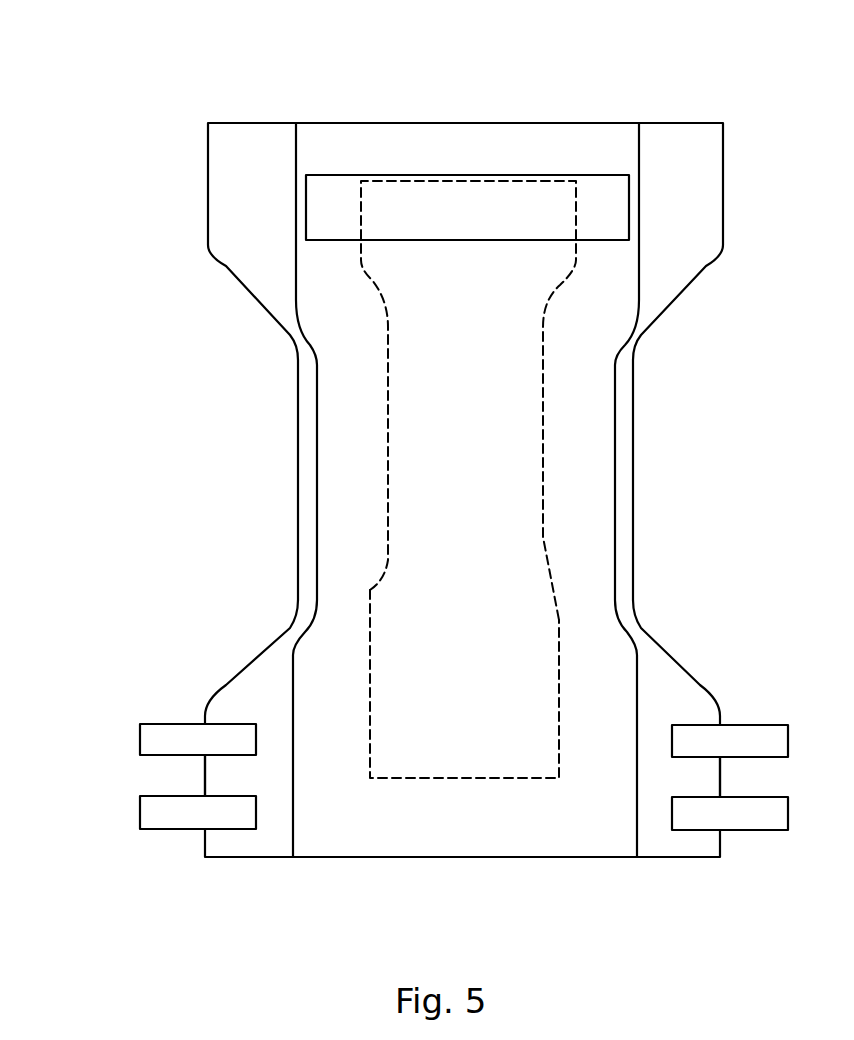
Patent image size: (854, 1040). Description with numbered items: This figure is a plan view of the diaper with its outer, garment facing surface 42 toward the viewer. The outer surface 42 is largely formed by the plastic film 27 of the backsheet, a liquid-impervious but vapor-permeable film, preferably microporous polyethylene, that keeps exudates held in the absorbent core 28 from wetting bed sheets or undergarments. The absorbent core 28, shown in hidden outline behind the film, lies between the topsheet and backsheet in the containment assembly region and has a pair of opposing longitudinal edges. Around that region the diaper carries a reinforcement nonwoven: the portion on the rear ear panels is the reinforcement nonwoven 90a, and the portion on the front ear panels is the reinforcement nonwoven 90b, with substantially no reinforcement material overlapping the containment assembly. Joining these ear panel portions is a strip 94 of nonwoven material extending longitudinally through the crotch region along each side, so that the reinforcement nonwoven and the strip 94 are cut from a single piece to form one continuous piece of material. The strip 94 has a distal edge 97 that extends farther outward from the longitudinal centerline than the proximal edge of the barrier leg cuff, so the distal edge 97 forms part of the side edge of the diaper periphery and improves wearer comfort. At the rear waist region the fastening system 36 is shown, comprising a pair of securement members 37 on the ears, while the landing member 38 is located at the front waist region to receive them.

The plastic film 27 is at (481, 824).
The absorbent core 28 is at (370, 590).
The fastening system 36 is at (137, 773).
The securement members 37 is at (172, 817).
The landing member 38 is at (494, 205).
The outer surface 42 is at (480, 472).
The reinforcement nonwoven 90a is at (258, 685).
The reinforcement nonwoven 90b is at (687, 140).
The strip 94 is at (310, 478).
The distal edge 97 is at (298, 400).